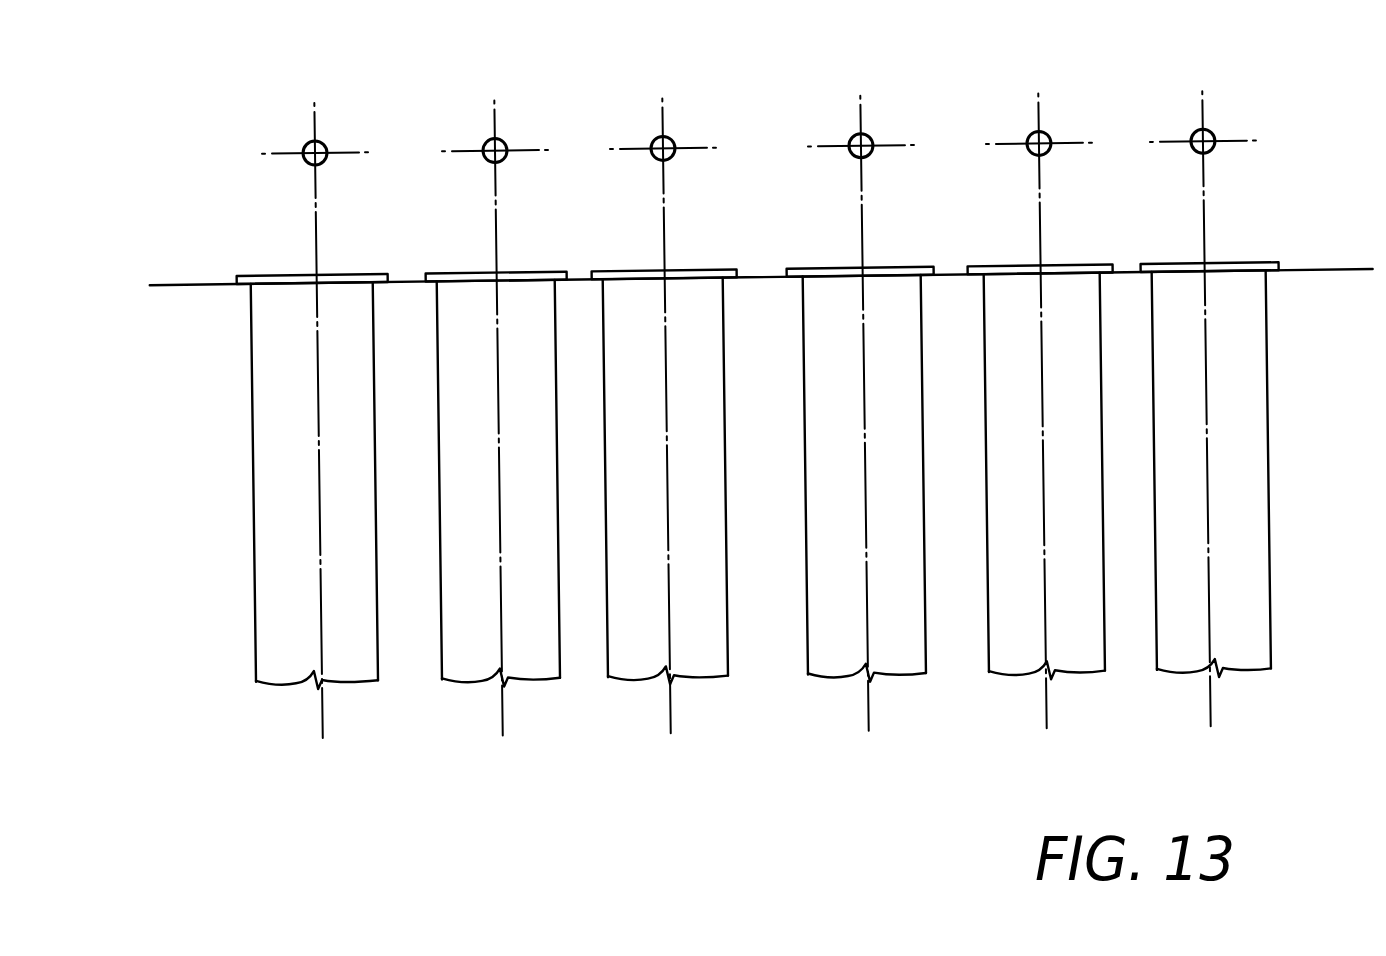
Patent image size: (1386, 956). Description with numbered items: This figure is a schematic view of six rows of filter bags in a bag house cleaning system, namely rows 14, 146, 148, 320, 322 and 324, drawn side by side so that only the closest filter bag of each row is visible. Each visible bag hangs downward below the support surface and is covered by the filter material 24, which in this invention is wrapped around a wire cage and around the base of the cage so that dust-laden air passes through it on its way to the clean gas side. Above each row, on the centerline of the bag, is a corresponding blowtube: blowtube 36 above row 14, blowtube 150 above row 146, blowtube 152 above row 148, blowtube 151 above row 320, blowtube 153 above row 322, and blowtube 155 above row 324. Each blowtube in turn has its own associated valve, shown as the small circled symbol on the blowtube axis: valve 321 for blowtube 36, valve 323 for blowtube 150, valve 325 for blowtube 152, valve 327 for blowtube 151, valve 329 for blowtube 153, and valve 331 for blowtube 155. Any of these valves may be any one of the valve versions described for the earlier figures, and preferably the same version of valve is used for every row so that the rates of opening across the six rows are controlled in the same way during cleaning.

The row of filter bags 14 is at (285, 697).
The row of filter bags 146 is at (440, 685).
The row of filter bags 148 is at (608, 685).
The row of filter bags 320 is at (800, 678).
The row of filter bags 322 is at (980, 672).
The row of filter bags 324 is at (1285, 653).
The filter material 24 is at (253, 492).
The blowtube 36 is at (307, 163).
The blowtube 150 is at (485, 157).
The blowtube 152 is at (655, 157).
The blowtube 151 is at (852, 158).
The blowtube 153 is at (1028, 157).
The blowtube 155 is at (1195, 153).
The valve 321 is at (322, 137).
The valve 323 is at (505, 130).
The valve 325 is at (675, 132).
The valve 327 is at (870, 130).
The valve 329 is at (1047, 130).
The valve 331 is at (1210, 125).